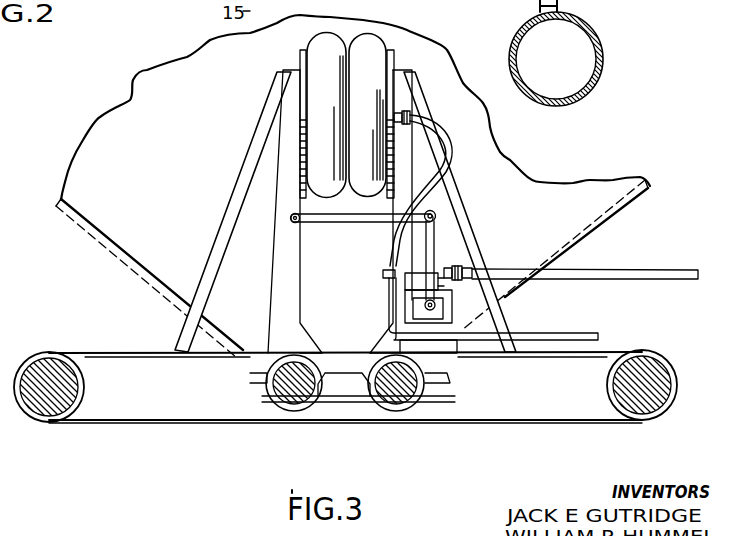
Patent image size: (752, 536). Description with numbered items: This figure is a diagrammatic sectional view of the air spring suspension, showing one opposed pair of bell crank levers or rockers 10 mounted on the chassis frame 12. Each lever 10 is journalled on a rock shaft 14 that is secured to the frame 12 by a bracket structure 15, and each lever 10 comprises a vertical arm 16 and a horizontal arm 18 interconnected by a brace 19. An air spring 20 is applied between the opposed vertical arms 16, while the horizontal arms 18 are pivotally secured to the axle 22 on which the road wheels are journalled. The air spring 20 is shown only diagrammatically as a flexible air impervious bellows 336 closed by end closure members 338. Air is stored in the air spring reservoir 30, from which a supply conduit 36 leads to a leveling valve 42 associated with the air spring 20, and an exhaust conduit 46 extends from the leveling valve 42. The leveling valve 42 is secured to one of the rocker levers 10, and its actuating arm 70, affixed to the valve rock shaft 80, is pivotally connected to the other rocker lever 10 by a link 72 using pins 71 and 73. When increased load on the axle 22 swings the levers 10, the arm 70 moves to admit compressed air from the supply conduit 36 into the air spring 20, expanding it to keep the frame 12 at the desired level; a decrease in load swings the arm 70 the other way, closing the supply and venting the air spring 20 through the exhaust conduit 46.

The bell crank lever 10 is at (226, 200).
The chassis frame 12 is at (146, 10).
The rock shaft 14 is at (294, 400).
The bracket structure 15 is at (347, 410).
The vertical arm 16 is at (290, 85).
The horizontal arm 18 is at (138, 353).
The brace 19 is at (213, 252).
The air spring 20 is at (393, 40).
The axle 22 is at (657, 397).
The air spring reservoir 30 is at (601, 50).
The supply conduit 36 is at (618, 270).
The leveling valve 42 is at (456, 301).
The exhaust conduit 46 is at (553, 332).
The leveling valve arm 70 is at (434, 253).
The pin 71 is at (437, 215).
The link 72 is at (360, 222).
The pin 73 is at (294, 223).
The rock shaft 80 is at (432, 309).
The bellows 336 is at (335, 43).
The end closure member 338 is at (303, 60).